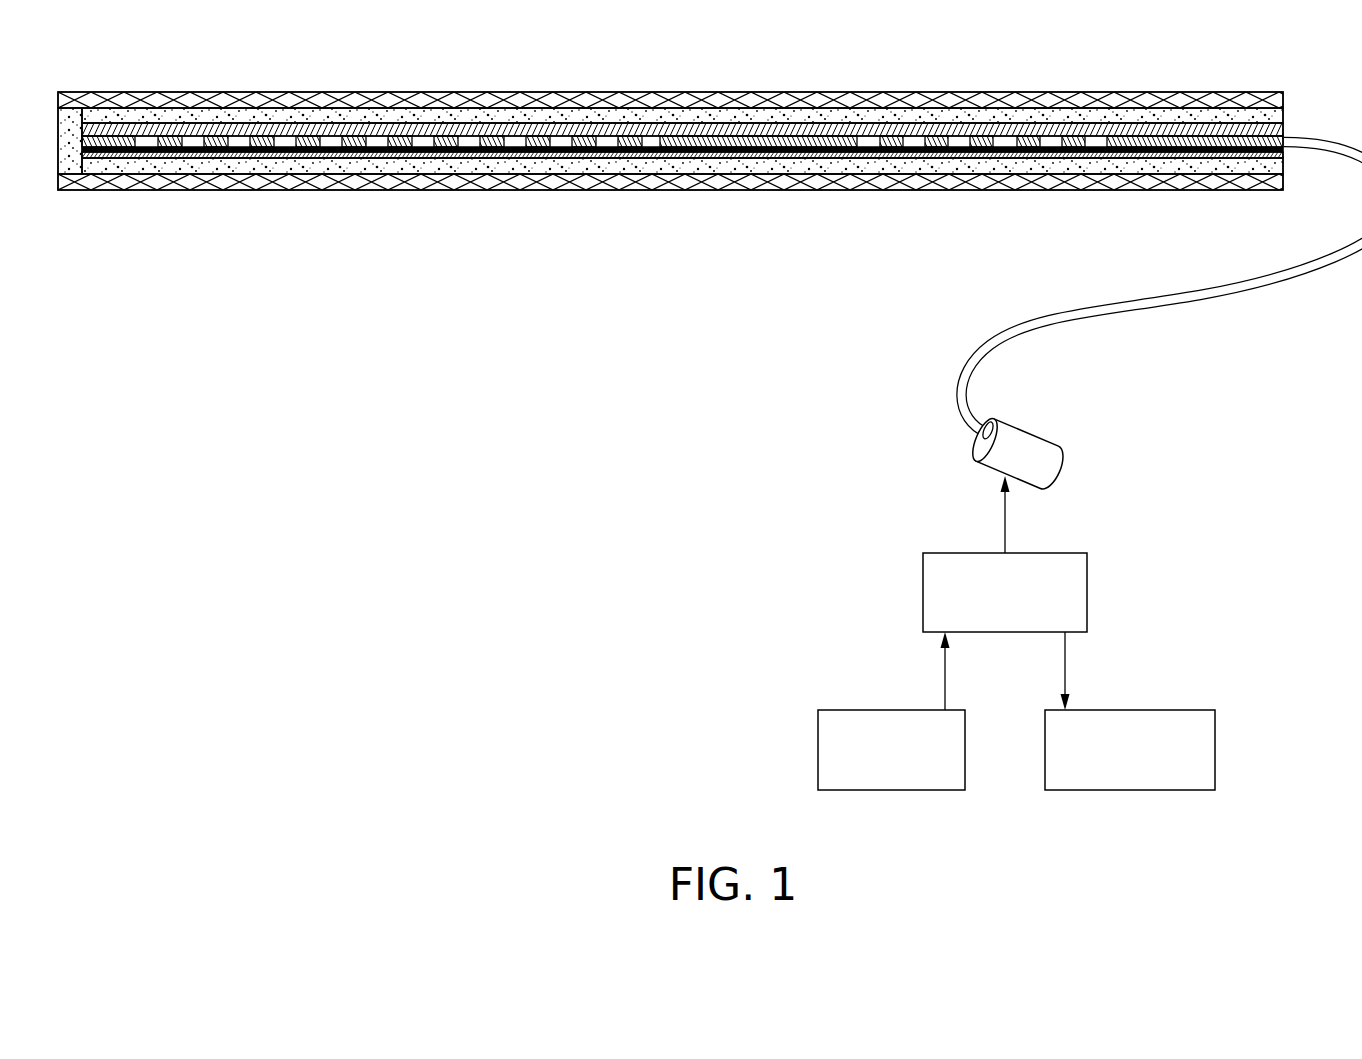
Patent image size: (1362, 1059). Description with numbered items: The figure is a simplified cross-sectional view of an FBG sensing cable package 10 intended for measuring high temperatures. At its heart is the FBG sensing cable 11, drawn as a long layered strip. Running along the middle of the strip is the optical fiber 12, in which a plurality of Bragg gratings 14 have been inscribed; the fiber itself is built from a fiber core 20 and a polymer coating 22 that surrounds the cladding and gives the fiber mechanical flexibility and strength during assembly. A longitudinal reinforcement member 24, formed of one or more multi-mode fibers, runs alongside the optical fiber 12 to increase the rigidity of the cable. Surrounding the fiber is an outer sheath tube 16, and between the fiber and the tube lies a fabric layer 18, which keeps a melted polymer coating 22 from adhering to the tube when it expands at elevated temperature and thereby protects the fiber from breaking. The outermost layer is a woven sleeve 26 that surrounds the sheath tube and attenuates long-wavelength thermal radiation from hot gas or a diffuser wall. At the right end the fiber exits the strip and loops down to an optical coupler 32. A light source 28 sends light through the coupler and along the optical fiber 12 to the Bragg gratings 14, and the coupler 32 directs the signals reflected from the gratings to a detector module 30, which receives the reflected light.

The FBG sensing cable package 10 is at (710, 410).
The FBG sensing cable 11 is at (670, 134).
The optical fiber 12 is at (682, 95).
The Bragg gratings 14 is at (682, 95).
The outer sheath tube 16 is at (313, 118).
The fabric layer 18 is at (394, 133).
The fiber core 20 is at (372, 153).
The polymer coating 22 is at (428, 157).
The longitudinal reinforcement member 24 is at (872, 134).
The outer woven sleeve 26 is at (770, 101).
The light source 28 is at (847, 710).
The detector module 30 is at (1177, 710).
The optical coupler 32 is at (1072, 553).